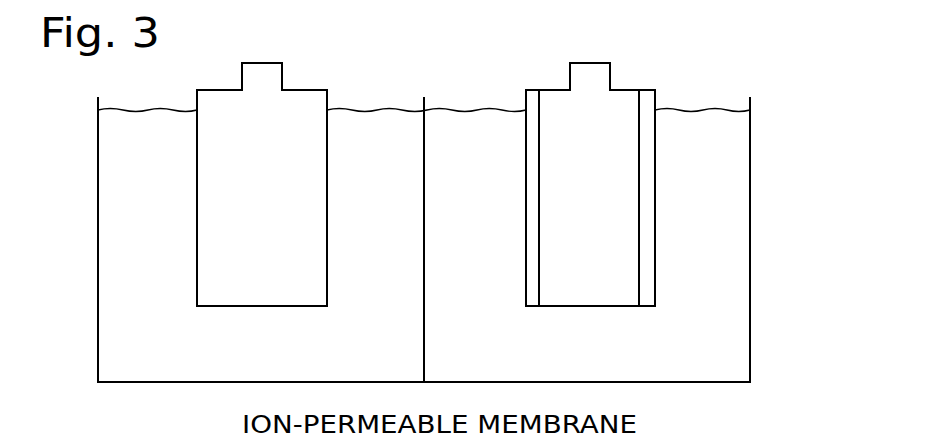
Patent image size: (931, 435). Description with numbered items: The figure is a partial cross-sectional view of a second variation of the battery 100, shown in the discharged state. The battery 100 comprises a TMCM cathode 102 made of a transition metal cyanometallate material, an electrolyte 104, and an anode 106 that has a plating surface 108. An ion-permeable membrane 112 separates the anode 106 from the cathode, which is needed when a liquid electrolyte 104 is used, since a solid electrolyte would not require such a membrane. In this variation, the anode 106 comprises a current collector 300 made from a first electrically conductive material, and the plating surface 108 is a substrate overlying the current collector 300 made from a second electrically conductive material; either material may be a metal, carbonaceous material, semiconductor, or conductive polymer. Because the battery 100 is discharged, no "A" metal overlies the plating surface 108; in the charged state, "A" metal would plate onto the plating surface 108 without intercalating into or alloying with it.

The battery 100 is at (590, 42).
The TMCM cathode 102 is at (283, 241).
The electrolyte 104 is at (285, 366).
The anode 106 is at (638, 58).
The plating surface 108 is at (526, 200).
The ion-permeable membrane 112 is at (424, 363).
The current collector 300 is at (613, 196).